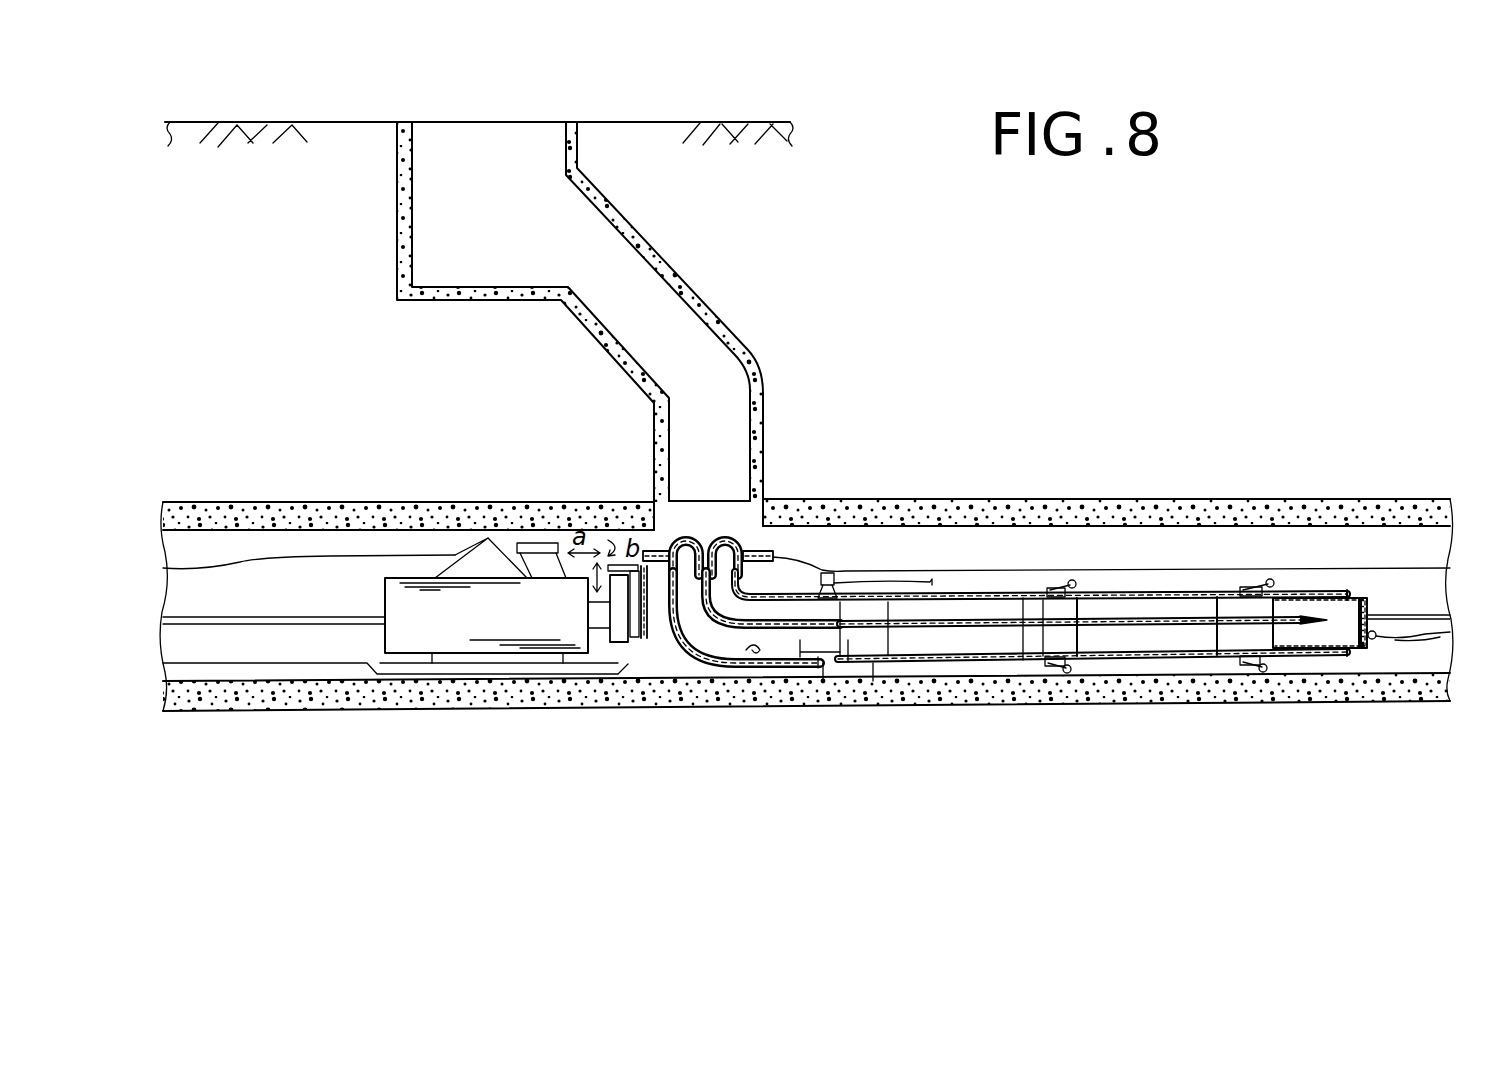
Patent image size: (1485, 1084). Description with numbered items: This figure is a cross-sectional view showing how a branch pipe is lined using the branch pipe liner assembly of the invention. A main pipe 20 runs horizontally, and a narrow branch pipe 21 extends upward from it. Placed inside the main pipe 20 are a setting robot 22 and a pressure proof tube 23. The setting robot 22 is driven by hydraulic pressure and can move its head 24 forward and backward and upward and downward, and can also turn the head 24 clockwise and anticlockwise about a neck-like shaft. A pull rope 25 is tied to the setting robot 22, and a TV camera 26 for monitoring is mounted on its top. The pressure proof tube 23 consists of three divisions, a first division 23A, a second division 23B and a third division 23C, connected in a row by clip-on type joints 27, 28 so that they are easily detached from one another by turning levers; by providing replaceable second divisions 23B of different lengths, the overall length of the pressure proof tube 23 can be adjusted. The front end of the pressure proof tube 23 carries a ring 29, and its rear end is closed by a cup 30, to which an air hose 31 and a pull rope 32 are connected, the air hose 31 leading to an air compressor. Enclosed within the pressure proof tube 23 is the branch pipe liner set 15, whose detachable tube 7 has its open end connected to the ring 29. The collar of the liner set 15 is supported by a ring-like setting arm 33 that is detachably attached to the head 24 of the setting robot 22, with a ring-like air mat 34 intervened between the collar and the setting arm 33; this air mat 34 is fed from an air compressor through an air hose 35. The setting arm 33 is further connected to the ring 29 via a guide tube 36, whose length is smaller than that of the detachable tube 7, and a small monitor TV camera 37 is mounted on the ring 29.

The detachable tube 7 is at (752, 660).
The branch pipe liner set 15 is at (888, 640).
The main pipe 20 is at (1150, 500).
The branch pipe 21 is at (713, 310).
The setting robot 22 is at (460, 640).
The pressure proof tube 23 is at (986, 671).
The first division 23A is at (965, 575).
The second division 23B is at (1178, 598).
The third division 23C is at (1292, 596).
The head 24 is at (615, 643).
The pull rope 25 is at (250, 665).
The TV camera 26 is at (537, 543).
The clip-on type joint 27 is at (1056, 668).
The clip-on type joint 28 is at (1247, 668).
The ring 29 is at (825, 664).
The cup 30 is at (1360, 598).
The air hose 31 is at (1410, 614).
The pull rope 32 is at (1412, 642).
The setting arm 33 is at (645, 620).
The air mat 34 is at (775, 556).
The air hose 35 is at (1062, 588).
The guide tube 36 is at (703, 665).
The monitor TV camera 37 is at (832, 570).